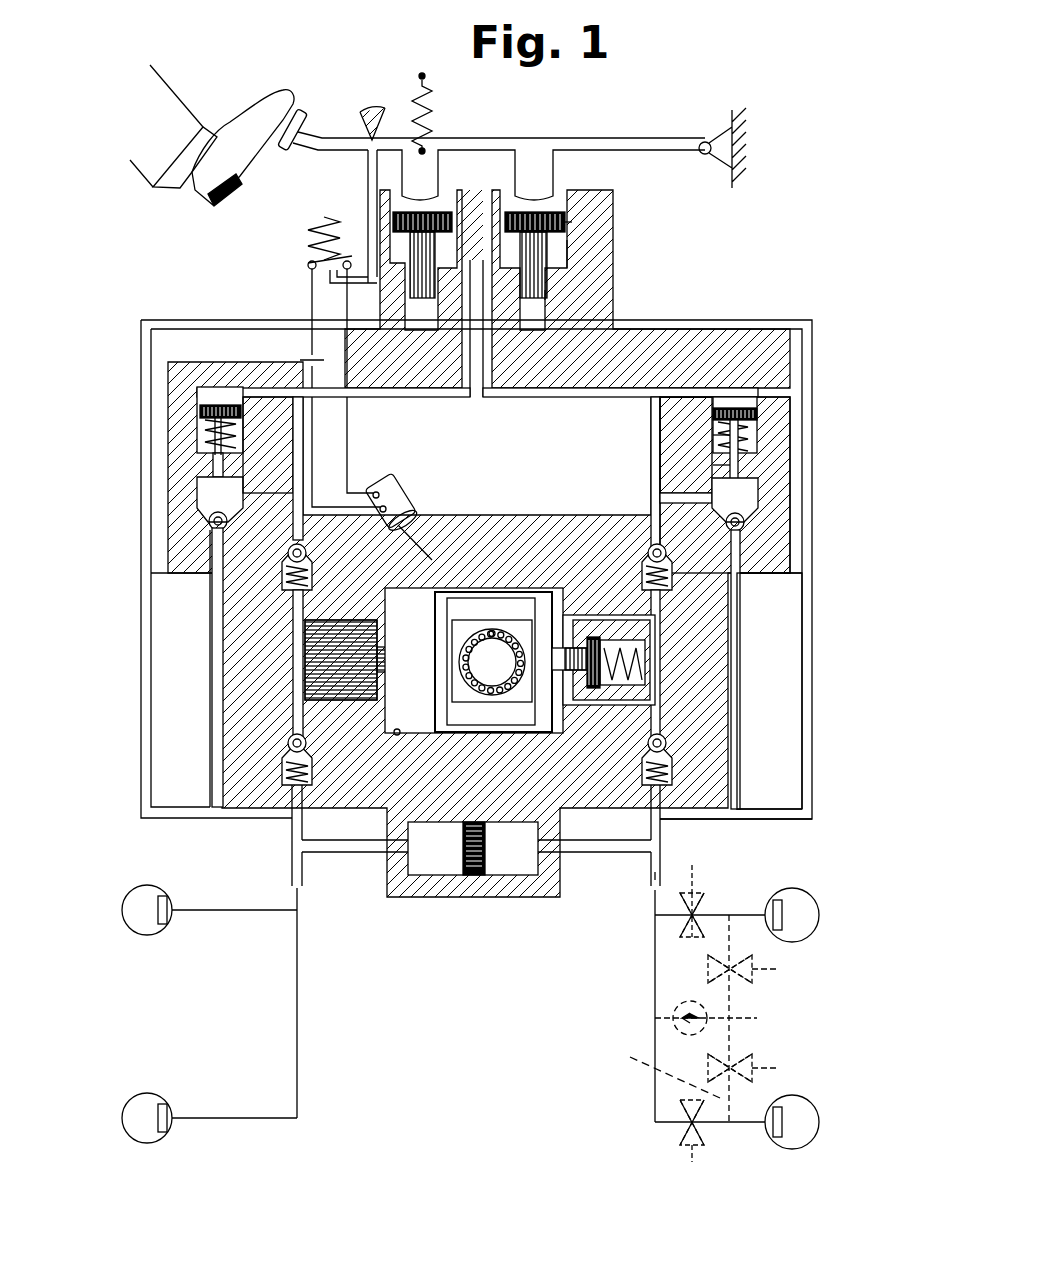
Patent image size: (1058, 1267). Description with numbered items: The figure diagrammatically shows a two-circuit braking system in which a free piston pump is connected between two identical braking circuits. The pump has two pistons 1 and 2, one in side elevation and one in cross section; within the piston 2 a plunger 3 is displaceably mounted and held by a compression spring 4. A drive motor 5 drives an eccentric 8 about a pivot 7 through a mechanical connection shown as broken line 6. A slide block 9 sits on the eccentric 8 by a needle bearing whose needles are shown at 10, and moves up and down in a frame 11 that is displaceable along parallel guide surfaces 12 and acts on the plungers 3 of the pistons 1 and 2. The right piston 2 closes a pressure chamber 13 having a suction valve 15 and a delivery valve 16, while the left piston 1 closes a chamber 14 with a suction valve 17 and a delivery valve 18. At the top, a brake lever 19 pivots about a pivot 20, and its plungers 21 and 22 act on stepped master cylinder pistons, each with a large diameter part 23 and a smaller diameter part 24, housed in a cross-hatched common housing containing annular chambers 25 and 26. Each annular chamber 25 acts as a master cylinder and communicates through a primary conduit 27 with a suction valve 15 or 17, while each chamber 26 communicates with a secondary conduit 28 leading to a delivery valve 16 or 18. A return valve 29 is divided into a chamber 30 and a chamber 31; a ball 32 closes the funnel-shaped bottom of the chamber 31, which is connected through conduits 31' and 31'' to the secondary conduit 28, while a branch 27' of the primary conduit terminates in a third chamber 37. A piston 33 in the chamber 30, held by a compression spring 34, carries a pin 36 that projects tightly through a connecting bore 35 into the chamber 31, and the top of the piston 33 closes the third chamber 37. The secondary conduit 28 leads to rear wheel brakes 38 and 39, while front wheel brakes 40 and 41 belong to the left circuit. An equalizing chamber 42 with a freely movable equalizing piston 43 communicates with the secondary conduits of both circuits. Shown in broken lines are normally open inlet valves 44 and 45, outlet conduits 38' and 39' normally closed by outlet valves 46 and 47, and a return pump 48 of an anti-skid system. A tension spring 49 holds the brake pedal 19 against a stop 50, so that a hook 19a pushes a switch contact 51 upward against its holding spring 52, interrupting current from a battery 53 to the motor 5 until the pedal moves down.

The piston 1 is at (340, 625).
The piston 2 is at (578, 615).
The plunger 3 is at (592, 710).
The compression spring 4 is at (605, 710).
The drive motor 5 is at (412, 474).
The mechanical connection 6 is at (415, 535).
The pivot 7 is at (478, 620).
The eccentric 8 is at (485, 730).
The slide block 9 is at (518, 712).
The needles 10 is at (510, 625).
The frame 11 is at (400, 740).
The guide surfaces 12 is at (385, 740).
The pressure chamber 13 is at (652, 660).
The chamber 14 is at (305, 652).
The suction valve 15 is at (672, 570).
The delivery valve 16 is at (672, 756).
The suction valve 17 is at (283, 566).
The delivery valve 18 is at (283, 760).
The brake lever 19 is at (618, 158).
The hook 19a is at (328, 288).
The pivot 20 is at (703, 157).
The plunger 21 is at (544, 180).
The plunger 22 is at (430, 180).
The large diameter part 23 is at (572, 222).
The smaller diameter part 24 is at (548, 290).
The annular chamber 25 is at (565, 255).
The annular chamber 26 is at (560, 312).
The primary conduit 27 is at (384, 412).
The branch 27' is at (620, 373).
The secondary conduit 28 is at (655, 833).
The return valve 29 is at (795, 471).
The chamber 30 is at (752, 432).
The chamber 31 is at (766, 521).
The conduit 31' is at (769, 691).
The conduit 31'' is at (736, 839).
The ball 32 is at (742, 532).
The piston 33 is at (758, 408).
The compression spring 34 is at (713, 435).
The connecting bore 35 is at (713, 465).
The pin 36 is at (742, 480).
The third chamber 37 is at (726, 395).
The wheel brake 38 is at (742, 988).
The outlet conduit 38' is at (748, 1018).
The wheel brake 39 is at (742, 1105).
The outlet conduit 39' is at (660, 1068).
The wheel brake 40 is at (145, 935).
The wheel brake 41 is at (148, 1093).
The equalizing chamber 42 is at (489, 880).
The equalizing piston 43 is at (450, 880).
The inlet valve 44 is at (697, 895).
The inlet valve 45 is at (696, 1148).
The outlet valve 46 is at (752, 975).
The outlet valve 47 is at (752, 1062).
The return pump 48 is at (680, 1030).
The tension spring 49 is at (430, 105).
The stop 50 is at (368, 118).
The switch contact 51 is at (305, 258).
The holding spring 52 is at (320, 216).
The battery 53 is at (300, 360).